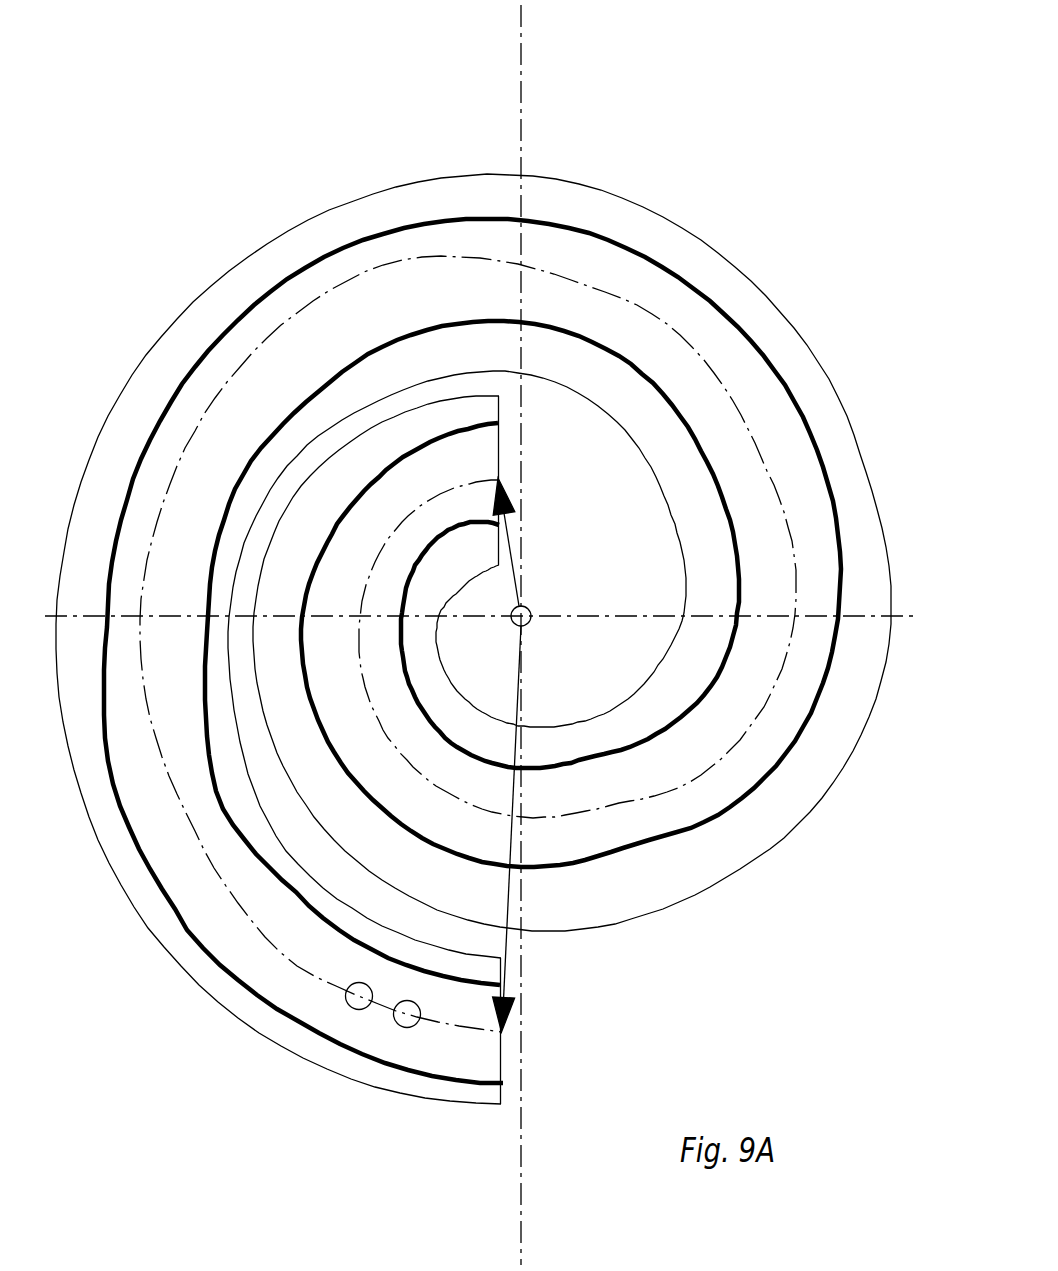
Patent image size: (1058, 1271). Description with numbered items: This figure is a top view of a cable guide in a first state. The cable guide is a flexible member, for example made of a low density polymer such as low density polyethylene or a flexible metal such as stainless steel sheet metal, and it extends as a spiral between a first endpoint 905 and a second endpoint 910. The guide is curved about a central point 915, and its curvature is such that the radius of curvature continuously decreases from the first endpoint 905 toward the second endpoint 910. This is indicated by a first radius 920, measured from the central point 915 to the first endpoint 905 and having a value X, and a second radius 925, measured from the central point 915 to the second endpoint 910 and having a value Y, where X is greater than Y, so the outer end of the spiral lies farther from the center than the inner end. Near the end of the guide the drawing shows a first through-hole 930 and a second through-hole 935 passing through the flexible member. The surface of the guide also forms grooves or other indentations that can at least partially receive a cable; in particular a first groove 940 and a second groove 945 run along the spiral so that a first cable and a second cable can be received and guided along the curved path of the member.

The first endpoint 905 is at (503, 1030).
The second endpoint 910 is at (500, 479).
The central point 915 is at (528, 609).
The first radius 920 is at (510, 893).
The second radius 925 is at (508, 548).
The first through-hole 930 is at (406, 1027).
The second through-hole 935 is at (350, 1006).
The first groove 940 is at (177, 915).
The second groove 945 is at (235, 828).